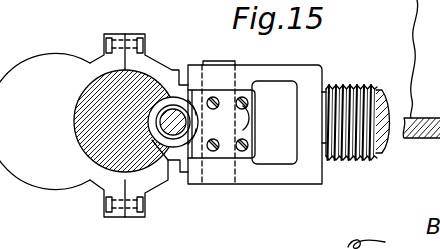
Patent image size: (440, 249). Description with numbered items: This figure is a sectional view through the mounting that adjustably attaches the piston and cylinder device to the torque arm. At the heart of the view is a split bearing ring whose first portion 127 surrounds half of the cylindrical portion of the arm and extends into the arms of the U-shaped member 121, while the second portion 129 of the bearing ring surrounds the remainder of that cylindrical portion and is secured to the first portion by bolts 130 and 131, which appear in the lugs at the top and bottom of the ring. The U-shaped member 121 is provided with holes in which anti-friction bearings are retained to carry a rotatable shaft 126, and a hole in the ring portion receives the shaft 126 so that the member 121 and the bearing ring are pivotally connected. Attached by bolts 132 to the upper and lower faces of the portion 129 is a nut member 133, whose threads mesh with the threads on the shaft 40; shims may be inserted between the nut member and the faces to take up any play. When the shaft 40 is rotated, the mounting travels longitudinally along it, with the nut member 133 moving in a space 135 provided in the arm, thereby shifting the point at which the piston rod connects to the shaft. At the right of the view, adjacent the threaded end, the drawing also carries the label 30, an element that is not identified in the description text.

The second portion of the bearing ring 129 is at (93, 72).
The bolt 130 is at (127, 33).
The bolt 131 is at (121, 218).
The space 135 is at (163, 143).
The shaft 40 is at (163, 163).
The first portion of the bearing ring 127 is at (164, 64).
The shaft 126 is at (238, 66).
The bolt 132 is at (216, 106).
The nut member 133 is at (253, 120).
The U-shaped member 121 is at (318, 67).
The end cap 30 is at (396, 70).